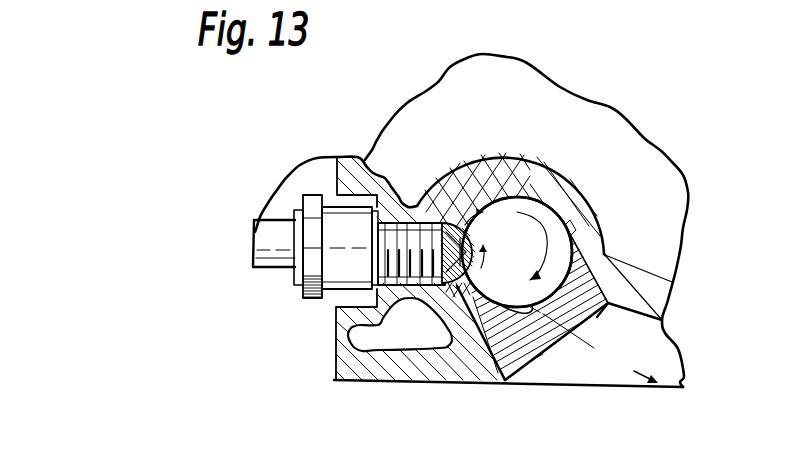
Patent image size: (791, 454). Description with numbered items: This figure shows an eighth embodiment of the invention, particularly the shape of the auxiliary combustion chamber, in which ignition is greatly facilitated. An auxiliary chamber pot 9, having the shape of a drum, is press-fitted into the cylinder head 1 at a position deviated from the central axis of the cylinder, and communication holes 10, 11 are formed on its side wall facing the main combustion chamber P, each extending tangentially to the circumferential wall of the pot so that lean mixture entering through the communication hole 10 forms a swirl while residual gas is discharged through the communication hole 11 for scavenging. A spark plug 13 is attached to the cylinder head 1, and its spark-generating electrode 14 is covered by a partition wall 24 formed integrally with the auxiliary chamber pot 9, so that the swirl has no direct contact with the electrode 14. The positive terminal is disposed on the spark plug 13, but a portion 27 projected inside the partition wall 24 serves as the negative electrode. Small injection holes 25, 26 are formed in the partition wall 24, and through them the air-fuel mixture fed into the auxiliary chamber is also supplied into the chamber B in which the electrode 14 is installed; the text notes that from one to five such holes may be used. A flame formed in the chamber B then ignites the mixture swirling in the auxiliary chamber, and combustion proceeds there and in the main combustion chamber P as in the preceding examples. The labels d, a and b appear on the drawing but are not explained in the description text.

The cylinder head 1 is at (643, 277).
The auxiliary chamber pot 9 is at (603, 247).
The communication hole 10 is at (532, 326).
The communication hole 11 is at (505, 312).
The spark plug 13 is at (403, 220).
The spark-generating electrode 14 is at (400, 363).
The partition wall 24 is at (451, 225).
The small injection hole 25 is at (474, 222).
The small injection hole 26 is at (450, 345).
The projected portion 27 is at (538, 157).
The chamber B is at (441, 222).
The main combustion chamber P is at (650, 348).
The roller diameter d is at (517, 252).
The point a is at (579, 338).
The point b is at (625, 365).